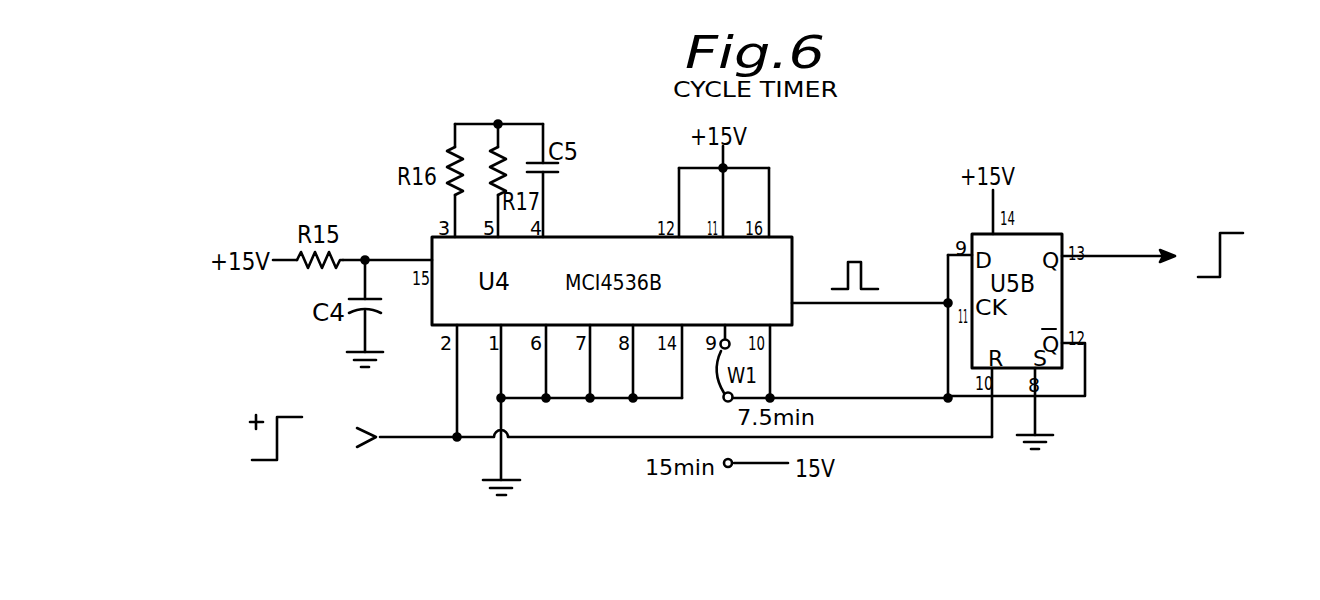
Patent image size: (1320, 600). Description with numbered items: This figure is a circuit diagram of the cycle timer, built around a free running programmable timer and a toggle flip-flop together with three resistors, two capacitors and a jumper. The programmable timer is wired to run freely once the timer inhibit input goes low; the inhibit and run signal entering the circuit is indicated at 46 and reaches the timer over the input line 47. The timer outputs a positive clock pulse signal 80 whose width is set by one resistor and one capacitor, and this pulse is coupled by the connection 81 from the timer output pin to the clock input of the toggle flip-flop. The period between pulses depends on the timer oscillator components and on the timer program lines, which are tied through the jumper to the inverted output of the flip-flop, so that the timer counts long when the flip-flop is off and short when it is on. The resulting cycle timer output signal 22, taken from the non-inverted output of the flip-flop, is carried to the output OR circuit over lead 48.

The cycle timer output signal 22 is at (1234, 254).
The inhibit/run input signal 46 is at (282, 433).
The input line to cycle timer 47 is at (428, 440).
The lead 48 is at (1120, 256).
The clock pulse signal 80 is at (862, 256).
The coupling to clock input 81 is at (833, 305).